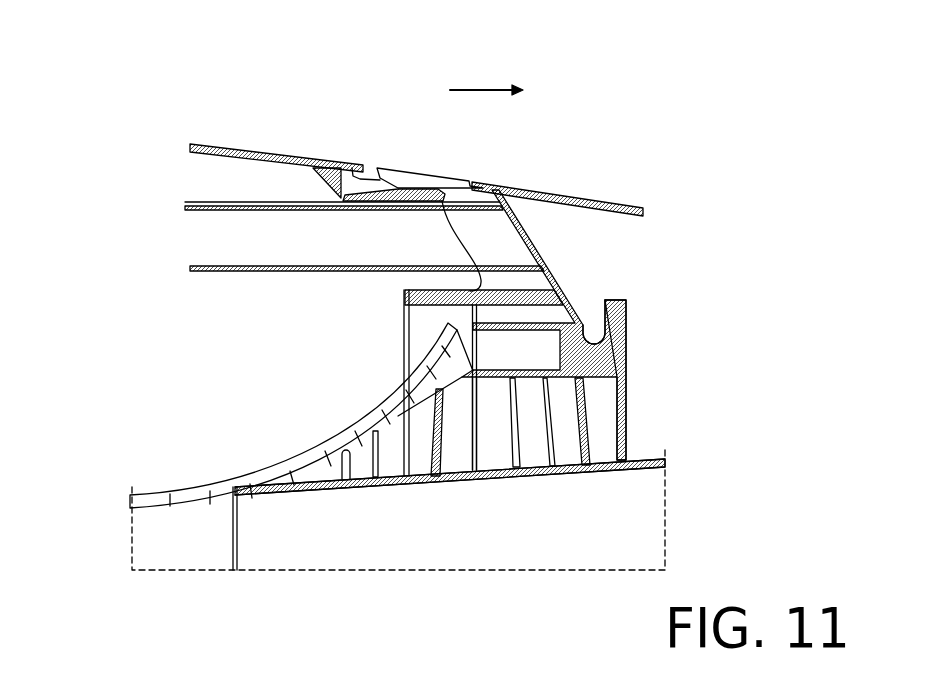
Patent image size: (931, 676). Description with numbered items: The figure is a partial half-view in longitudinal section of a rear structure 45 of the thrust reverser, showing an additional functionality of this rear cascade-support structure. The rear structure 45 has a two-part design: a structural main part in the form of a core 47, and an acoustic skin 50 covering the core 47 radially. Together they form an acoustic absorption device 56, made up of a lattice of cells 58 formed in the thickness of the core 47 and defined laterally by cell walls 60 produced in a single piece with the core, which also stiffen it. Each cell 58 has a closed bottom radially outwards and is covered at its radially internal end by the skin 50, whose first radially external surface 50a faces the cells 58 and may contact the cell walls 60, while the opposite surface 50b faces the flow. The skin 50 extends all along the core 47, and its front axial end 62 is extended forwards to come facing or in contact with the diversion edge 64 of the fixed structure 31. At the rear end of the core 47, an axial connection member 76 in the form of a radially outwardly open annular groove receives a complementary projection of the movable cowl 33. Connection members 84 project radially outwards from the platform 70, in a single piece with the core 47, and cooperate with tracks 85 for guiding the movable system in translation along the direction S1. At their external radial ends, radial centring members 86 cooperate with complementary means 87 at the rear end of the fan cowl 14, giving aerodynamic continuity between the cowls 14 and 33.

The fan cowl 14 is at (253, 150).
The track for guiding in translation 85 is at (258, 202).
The complementary means 87 is at (348, 195).
The radial centring member 86 is at (398, 168).
The movable cowl 33 is at (552, 186).
The direction S1 is at (483, 85).
The connection member 84 is at (527, 278).
The axial connection member 76 is at (595, 327).
The core 47 is at (640, 364).
The platform 70 is at (410, 288).
The diversion edge 64 is at (200, 486).
The acoustic skin 50 is at (677, 462).
The first radially external surface 50a is at (647, 458).
The lower surface of plate 50b is at (633, 467).
The front axial end 62 is at (250, 492).
The fixed structure 31 is at (122, 524).
The cell wall 60 is at (440, 442).
The acoustic absorption device 56 is at (470, 452).
The cell 58 is at (603, 453).
The rear structure 45 is at (738, 513).